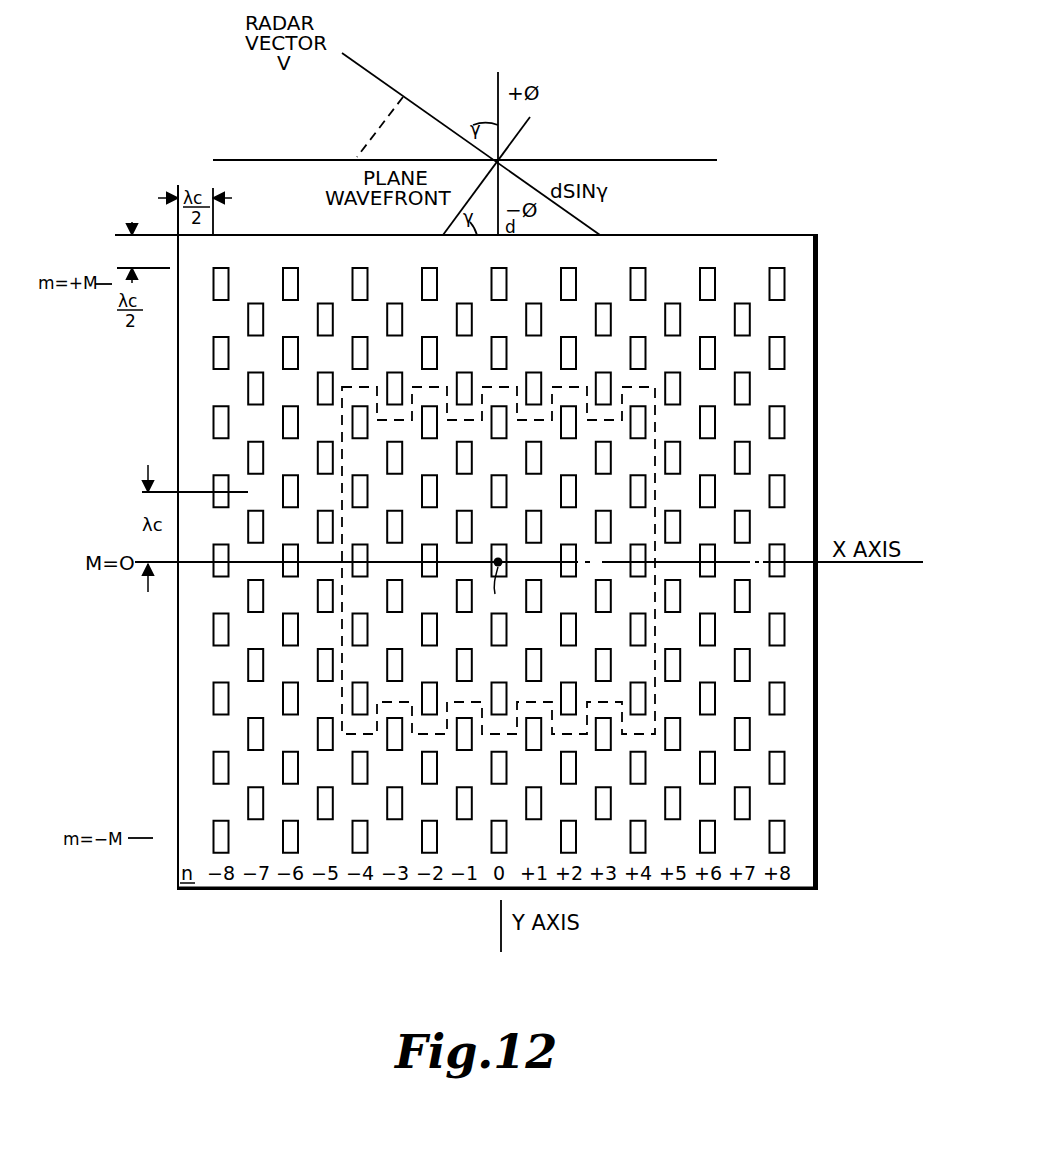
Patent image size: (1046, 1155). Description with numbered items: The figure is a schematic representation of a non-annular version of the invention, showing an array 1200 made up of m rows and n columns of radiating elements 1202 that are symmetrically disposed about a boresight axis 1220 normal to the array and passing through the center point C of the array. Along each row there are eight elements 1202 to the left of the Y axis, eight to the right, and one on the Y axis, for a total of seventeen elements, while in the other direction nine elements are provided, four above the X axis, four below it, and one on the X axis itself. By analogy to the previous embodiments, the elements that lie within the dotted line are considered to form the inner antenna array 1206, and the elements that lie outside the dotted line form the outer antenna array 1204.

The array 1200 is at (817, 328).
The elements 1202 is at (782, 266).
The outer antenna array 1204 is at (778, 530).
The inner antenna array 1206 is at (525, 537).
The boresight axis 1220 is at (519, 124).